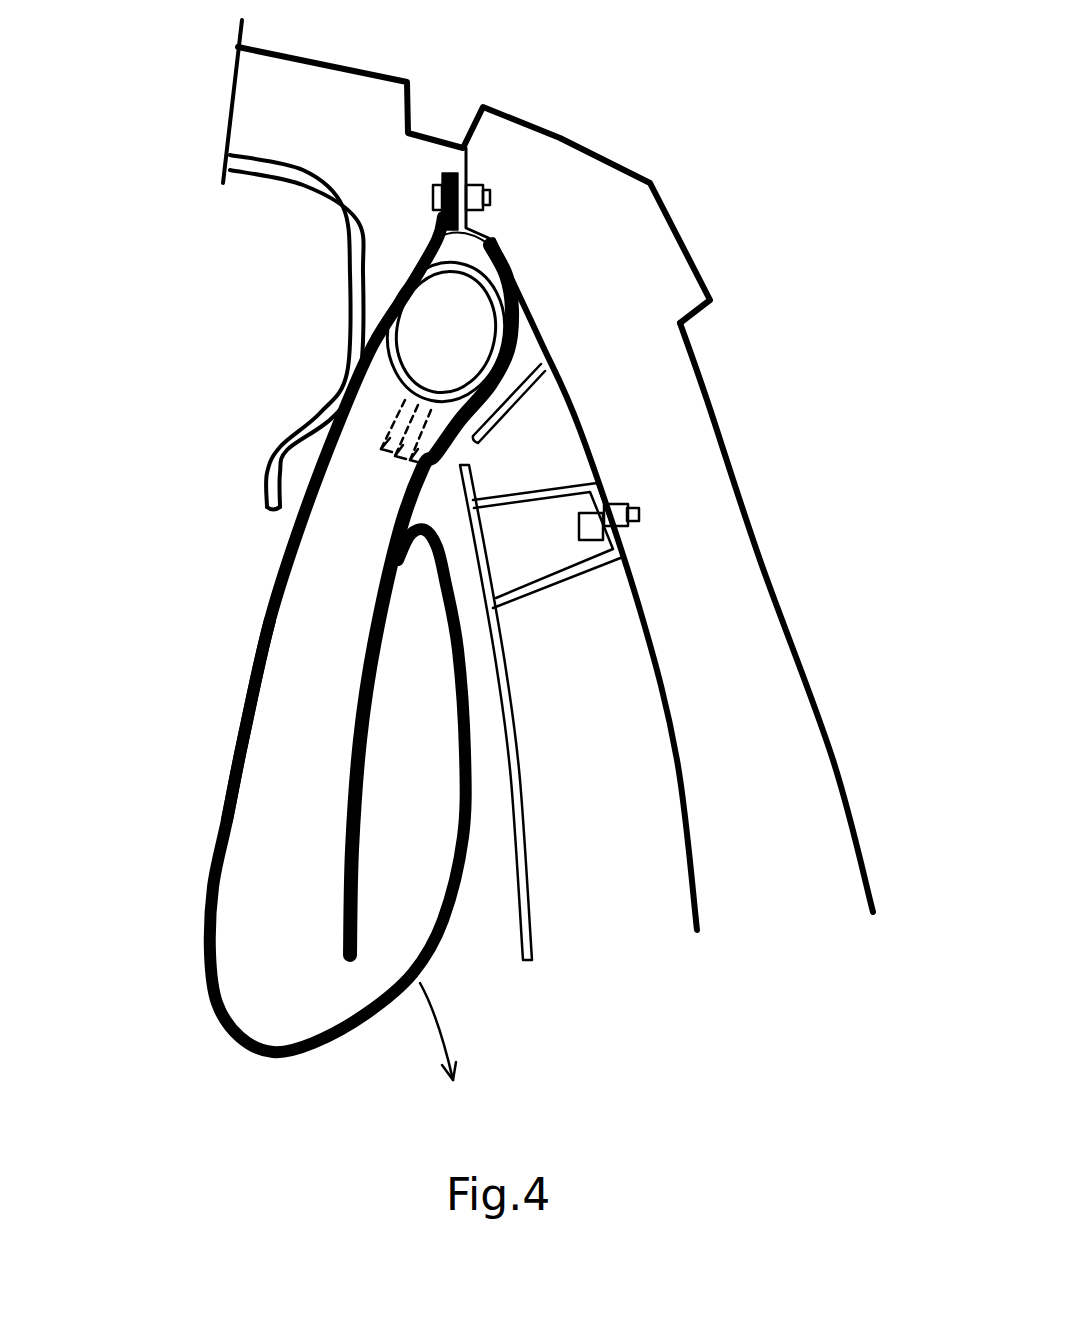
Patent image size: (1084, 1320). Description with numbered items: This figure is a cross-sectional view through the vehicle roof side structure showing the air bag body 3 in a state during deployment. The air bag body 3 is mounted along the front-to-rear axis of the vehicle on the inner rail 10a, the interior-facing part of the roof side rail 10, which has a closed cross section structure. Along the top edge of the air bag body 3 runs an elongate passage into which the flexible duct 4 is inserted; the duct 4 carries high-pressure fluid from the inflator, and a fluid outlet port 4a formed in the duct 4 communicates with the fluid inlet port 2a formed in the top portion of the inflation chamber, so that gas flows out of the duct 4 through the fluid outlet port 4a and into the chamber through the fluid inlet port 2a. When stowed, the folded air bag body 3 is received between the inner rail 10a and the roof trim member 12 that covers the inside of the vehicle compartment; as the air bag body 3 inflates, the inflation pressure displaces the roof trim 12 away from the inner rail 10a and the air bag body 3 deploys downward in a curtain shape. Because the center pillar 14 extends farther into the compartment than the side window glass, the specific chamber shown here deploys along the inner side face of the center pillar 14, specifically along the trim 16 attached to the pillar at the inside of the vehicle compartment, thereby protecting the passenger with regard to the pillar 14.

The roof side rail 10 is at (617, 150).
The inner rail 10a is at (510, 254).
The roof trim member 12 is at (340, 247).
The center pillar 14 is at (837, 740).
The trim 16 is at (520, 913).
The flexible duct 4 is at (393, 323).
The fluid outlet port 4a is at (410, 407).
The air bag body 3 is at (243, 693).
The fluid inlet port 2a is at (353, 473).